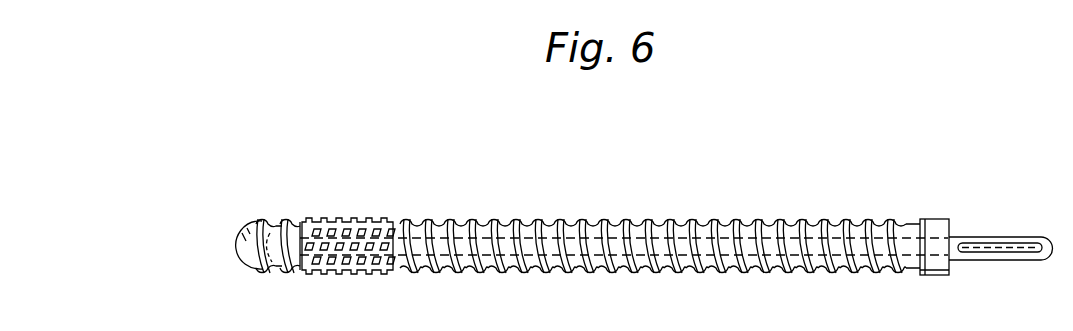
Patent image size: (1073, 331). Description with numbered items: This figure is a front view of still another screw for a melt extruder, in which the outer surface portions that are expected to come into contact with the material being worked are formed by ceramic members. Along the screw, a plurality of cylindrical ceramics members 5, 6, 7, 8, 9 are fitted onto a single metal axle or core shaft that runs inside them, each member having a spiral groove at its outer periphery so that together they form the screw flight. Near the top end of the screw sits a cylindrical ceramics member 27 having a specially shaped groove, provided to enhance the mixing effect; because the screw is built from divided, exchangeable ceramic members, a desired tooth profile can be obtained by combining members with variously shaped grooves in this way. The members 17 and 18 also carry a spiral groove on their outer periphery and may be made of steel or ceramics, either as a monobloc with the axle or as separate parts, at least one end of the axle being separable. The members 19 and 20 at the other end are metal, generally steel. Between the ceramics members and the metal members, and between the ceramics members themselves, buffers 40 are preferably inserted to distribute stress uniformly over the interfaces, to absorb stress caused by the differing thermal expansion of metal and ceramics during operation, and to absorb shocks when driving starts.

The ceramic member 5 is at (813, 247).
The ceramic member 6 is at (735, 240).
The ceramic member 7 is at (630, 237).
The ceramic member 8 is at (523, 240).
The ceramic member 9 is at (463, 243).
The screw member 17 is at (274, 226).
The screw member 18 is at (890, 240).
The screw member 19 is at (933, 227).
The screw member 20 is at (995, 240).
The cylindrical ceramics member 27 is at (360, 218).
The buffer 40 is at (433, 223).